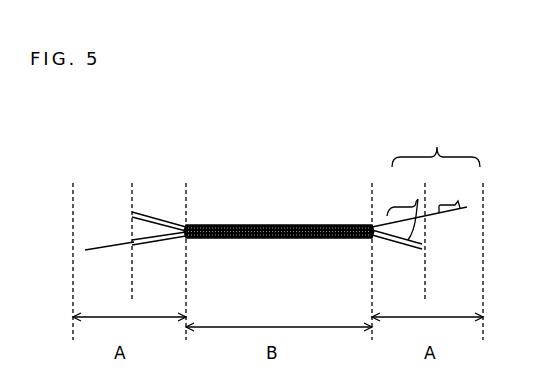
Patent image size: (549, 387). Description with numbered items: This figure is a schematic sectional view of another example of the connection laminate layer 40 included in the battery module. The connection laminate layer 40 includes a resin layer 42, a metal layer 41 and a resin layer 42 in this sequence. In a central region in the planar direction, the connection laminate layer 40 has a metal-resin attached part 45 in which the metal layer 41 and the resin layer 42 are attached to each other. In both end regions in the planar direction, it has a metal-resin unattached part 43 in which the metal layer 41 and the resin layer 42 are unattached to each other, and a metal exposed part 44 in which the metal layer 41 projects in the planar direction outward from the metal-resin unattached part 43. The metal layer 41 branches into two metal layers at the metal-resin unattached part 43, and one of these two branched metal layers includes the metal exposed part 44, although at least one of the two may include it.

The connection laminate layer 40 is at (436, 142).
The metal layer 41 is at (453, 193).
The resin layer 42 is at (402, 207).
The metal-resin unattached part 43 is at (277, 247).
The metal exposed part 44 is at (276, 242).
The metal-resin attached part 45 is at (279, 246).